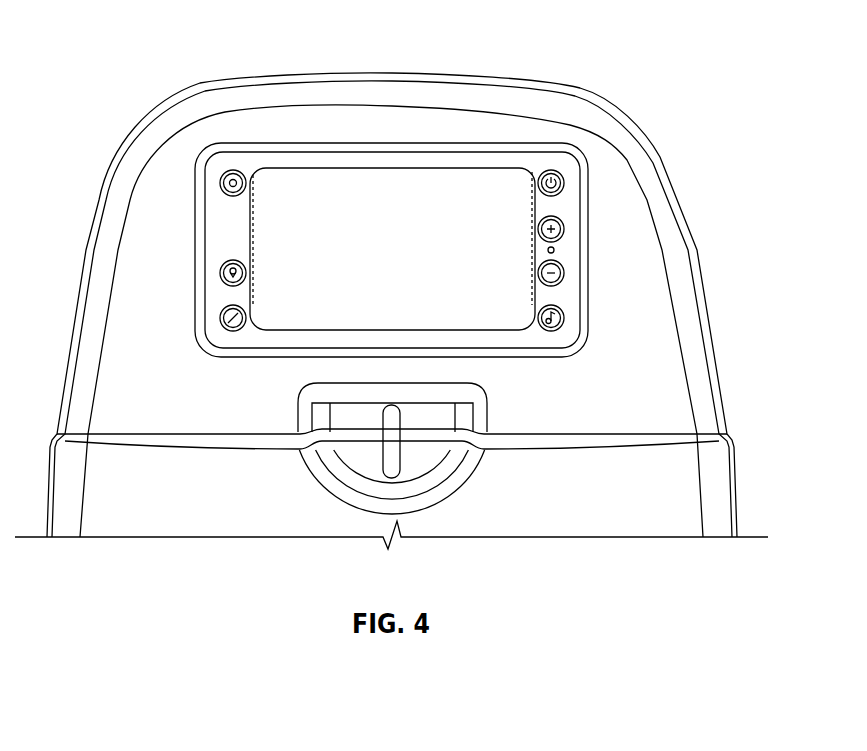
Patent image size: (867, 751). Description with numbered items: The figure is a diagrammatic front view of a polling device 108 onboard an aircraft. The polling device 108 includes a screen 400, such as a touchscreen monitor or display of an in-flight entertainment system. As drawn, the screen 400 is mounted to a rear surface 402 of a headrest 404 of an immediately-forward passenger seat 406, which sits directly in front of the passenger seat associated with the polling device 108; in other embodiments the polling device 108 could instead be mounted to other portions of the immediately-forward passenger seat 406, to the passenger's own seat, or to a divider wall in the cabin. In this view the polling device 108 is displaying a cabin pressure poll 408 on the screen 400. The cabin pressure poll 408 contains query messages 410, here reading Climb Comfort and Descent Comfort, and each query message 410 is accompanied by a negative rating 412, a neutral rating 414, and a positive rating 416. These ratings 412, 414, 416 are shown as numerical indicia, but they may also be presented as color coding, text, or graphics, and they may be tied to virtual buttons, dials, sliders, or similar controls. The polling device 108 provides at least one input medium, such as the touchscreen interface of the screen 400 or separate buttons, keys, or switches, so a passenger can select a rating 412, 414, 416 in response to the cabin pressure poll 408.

The polling device 108 is at (517, 153).
The screen 400 is at (407, 175).
The rear surface 402 is at (618, 183).
The headrest 404 is at (487, 98).
The immediately-forward passenger seat 406 is at (693, 318).
The cabin pressure poll 408 is at (250, 250).
The query messages 410 is at (313, 190).
The negative rating 412 is at (297, 212).
The neutral rating 414 is at (391, 213).
The positive rating 416 is at (480, 213).